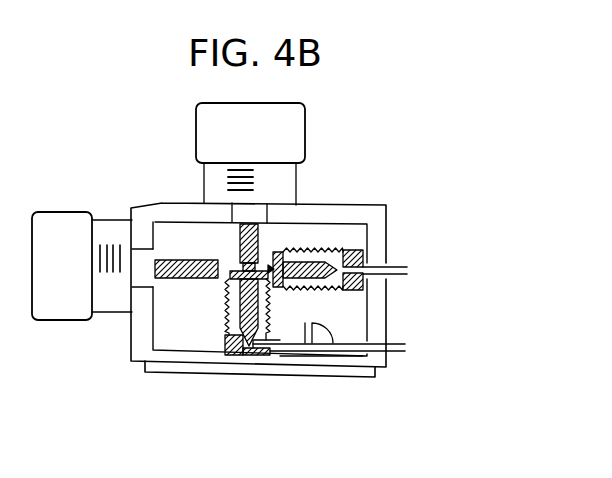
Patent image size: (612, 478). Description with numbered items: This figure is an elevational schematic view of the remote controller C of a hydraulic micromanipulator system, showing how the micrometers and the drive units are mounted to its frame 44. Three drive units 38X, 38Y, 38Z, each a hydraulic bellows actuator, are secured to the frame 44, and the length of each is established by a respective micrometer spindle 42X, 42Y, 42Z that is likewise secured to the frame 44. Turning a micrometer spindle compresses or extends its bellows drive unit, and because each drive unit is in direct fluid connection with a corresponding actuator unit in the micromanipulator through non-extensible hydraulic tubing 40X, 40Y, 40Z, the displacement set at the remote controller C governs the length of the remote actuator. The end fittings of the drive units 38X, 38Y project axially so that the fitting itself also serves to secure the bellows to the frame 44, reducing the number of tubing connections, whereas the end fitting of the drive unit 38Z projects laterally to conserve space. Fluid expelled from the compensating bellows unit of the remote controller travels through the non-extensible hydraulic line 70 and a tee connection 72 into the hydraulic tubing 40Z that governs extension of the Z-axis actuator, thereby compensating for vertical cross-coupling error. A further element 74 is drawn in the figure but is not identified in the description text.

The remote controller C is at (160, 153).
The frame 44 is at (140, 342).
The micrometer spindle 42X is at (195, 258).
The micrometer spindle 42Y is at (124, 222).
The micrometer spindle 42Z is at (258, 245).
The drive unit 38X is at (310, 296).
The drive unit 38Y is at (391, 293).
The drive unit 38Z is at (220, 312).
The hydraulic tubing 40X is at (442, 242).
The hydraulic tubing 40Y is at (434, 244).
The hydraulic tubing 40Z is at (392, 357).
The hydraulic line 70 is at (345, 352).
The tee connection 72 is at (308, 353).
The valve seat 74 is at (278, 350).